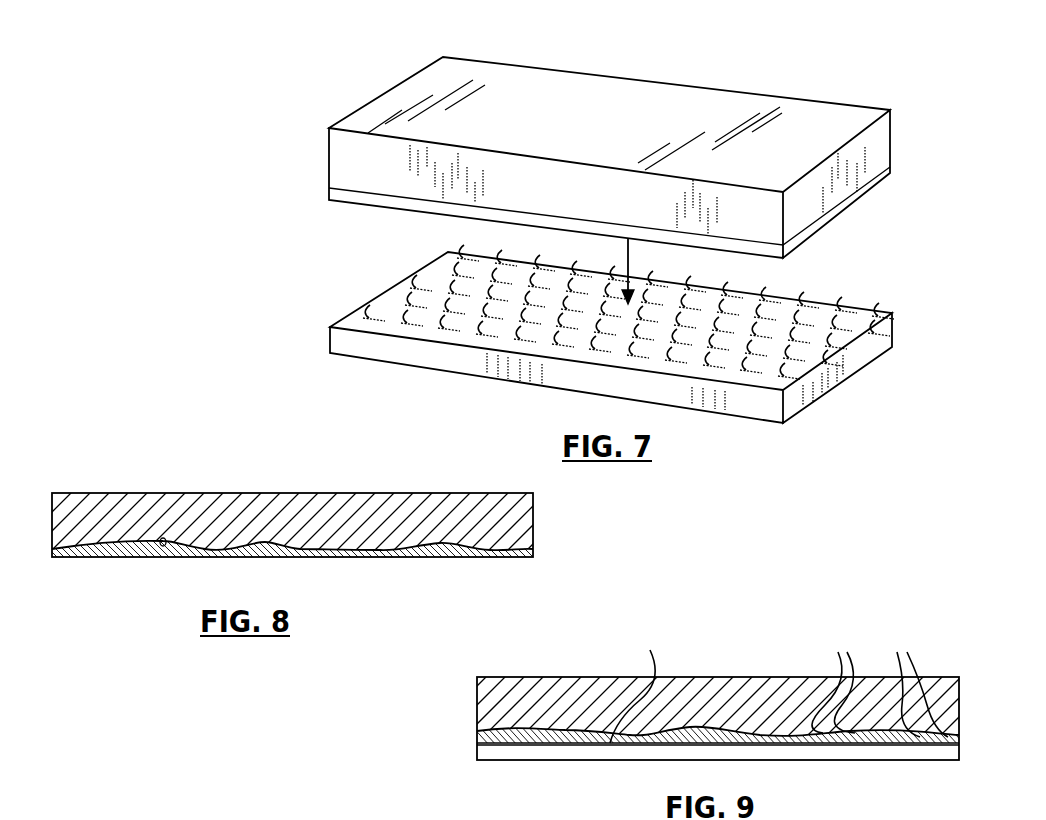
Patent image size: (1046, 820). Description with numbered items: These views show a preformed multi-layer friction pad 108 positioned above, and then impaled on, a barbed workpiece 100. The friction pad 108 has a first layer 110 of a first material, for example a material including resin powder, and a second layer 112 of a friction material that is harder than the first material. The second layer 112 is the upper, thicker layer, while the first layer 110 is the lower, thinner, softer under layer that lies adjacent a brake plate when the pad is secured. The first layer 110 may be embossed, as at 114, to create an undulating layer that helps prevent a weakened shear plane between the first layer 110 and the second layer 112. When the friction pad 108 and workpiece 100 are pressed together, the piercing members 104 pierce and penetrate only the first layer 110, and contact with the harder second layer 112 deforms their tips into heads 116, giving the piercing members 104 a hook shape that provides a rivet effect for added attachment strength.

In FIG. 7, the barbed workpiece 100 is at (870, 298).
In FIG. 9, the barbed workpiece 100 is at (824, 776).
In FIG. 9, the piercing members 104 is at (831, 677).
In FIG. 7, the multi-layer friction pad 108 is at (798, 73).
In FIG. 8, the multi-layer friction pad 108 is at (177, 490).
In FIG. 9, the multi-layer friction pad 108 is at (569, 673).
In FIG. 7, the first layer 110 is at (322, 188).
In FIG. 8, the first layer 110 is at (258, 543).
In FIG. 9, the first layer 110 is at (469, 731).
In FIG. 7, the second layer 112 is at (322, 128).
In FIG. 8, the second layer 112 is at (338, 507).
In FIG. 9, the second layer 112 is at (469, 677).
In FIG. 8, the embossing 114 is at (163, 547).
In FIG. 9, the heads 116 is at (779, 682).